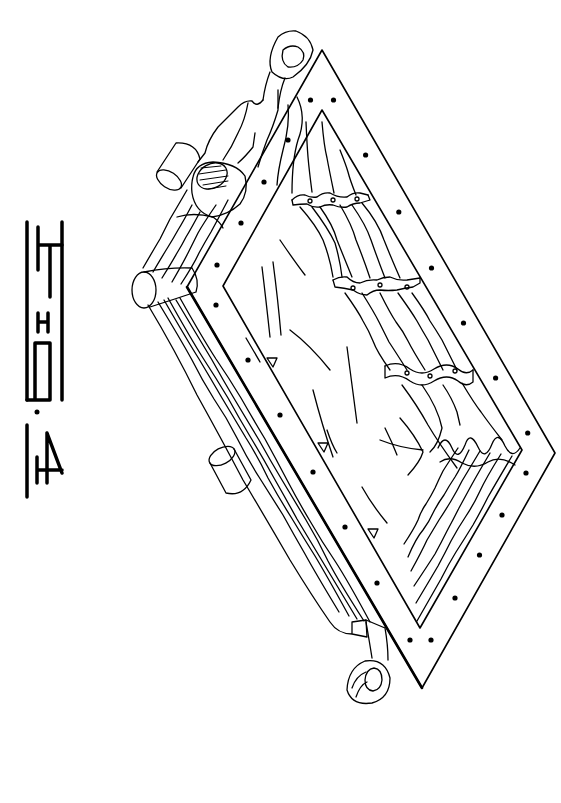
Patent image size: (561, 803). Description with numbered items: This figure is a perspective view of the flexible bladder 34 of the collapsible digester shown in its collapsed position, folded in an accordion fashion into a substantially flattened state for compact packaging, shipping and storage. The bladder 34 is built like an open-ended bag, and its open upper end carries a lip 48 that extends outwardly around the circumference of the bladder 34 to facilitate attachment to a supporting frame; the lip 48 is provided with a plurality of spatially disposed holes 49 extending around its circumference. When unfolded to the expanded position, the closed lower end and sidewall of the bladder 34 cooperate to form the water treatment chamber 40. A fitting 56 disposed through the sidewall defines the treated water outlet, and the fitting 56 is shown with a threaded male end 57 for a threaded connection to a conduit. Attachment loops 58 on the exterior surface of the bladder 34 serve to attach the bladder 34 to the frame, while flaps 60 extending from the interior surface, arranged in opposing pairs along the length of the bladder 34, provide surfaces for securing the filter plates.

The flexible bladder 34 is at (427, 213).
The water treatment chamber 40 is at (460, 527).
The lip 48 is at (457, 627).
The holes 49 is at (248, 362).
The fitting 56 is at (200, 213).
The threaded male end 57 is at (195, 180).
The attachment loops 58 is at (352, 700).
The flaps 60 is at (483, 390).